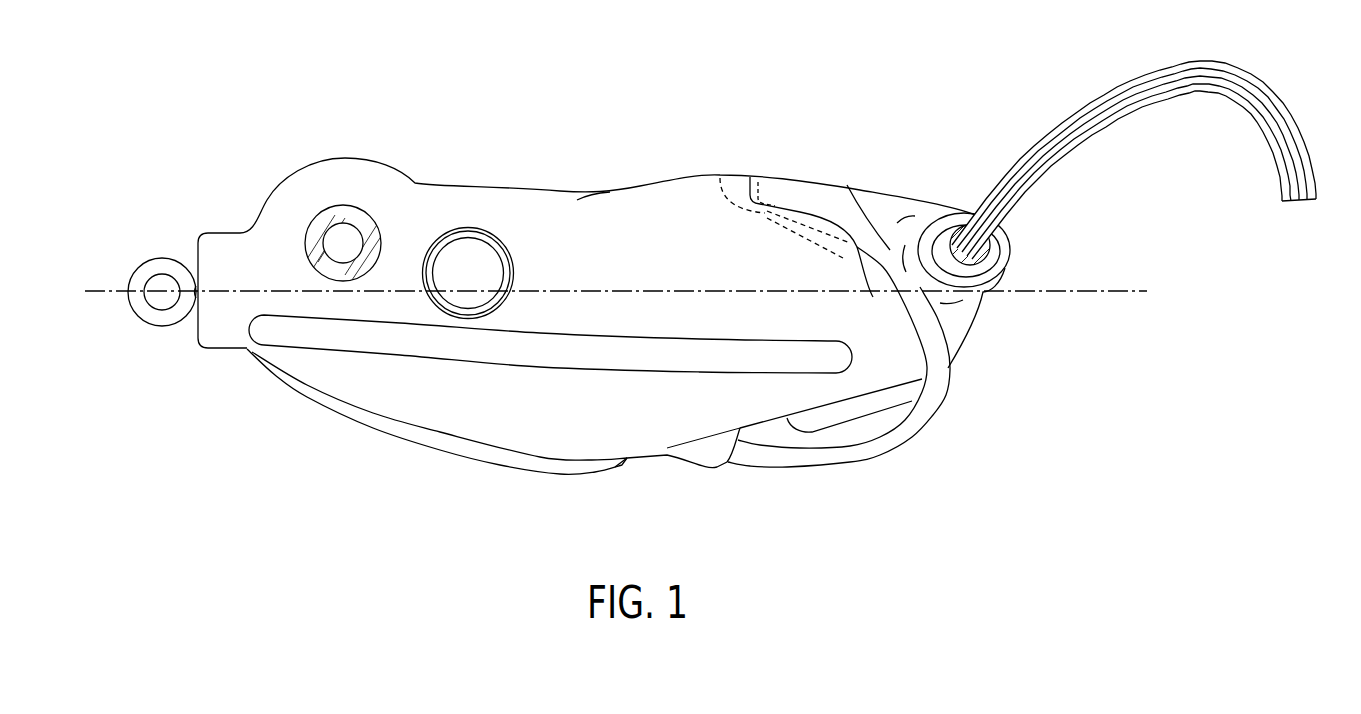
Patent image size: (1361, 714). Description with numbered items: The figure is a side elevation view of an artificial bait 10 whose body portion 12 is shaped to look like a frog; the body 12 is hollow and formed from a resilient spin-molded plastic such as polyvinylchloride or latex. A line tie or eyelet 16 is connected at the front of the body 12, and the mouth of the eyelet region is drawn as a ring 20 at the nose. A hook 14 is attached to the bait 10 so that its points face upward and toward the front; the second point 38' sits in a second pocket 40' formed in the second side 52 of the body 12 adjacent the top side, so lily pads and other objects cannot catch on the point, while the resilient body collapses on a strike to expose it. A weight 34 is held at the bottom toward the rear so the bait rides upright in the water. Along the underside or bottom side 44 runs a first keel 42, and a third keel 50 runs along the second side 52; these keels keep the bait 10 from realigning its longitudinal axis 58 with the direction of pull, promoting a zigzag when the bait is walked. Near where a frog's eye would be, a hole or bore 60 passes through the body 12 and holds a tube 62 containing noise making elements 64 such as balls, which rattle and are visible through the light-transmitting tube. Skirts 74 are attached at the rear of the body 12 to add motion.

The artificial bait 10 is at (793, 85).
The body portion 12 is at (503, 430).
The hook 14 is at (857, 443).
The line tie or eyelet 16 is at (148, 323).
The line tie eyelet 20 is at (137, 280).
The weight 34 is at (810, 422).
The second point 38' is at (778, 185).
The second pocket 40' is at (820, 210).
The first keel 42 is at (387, 433).
The bottom side 44 is at (607, 489).
The third keel 50 is at (608, 353).
The second side 52 is at (532, 426).
The longitudinal axis 58 is at (1103, 295).
The hole or bore 60 is at (314, 190).
The tube 62 is at (343, 220).
The noise making elements 64 is at (347, 240).
The skirts 74 is at (1123, 103).